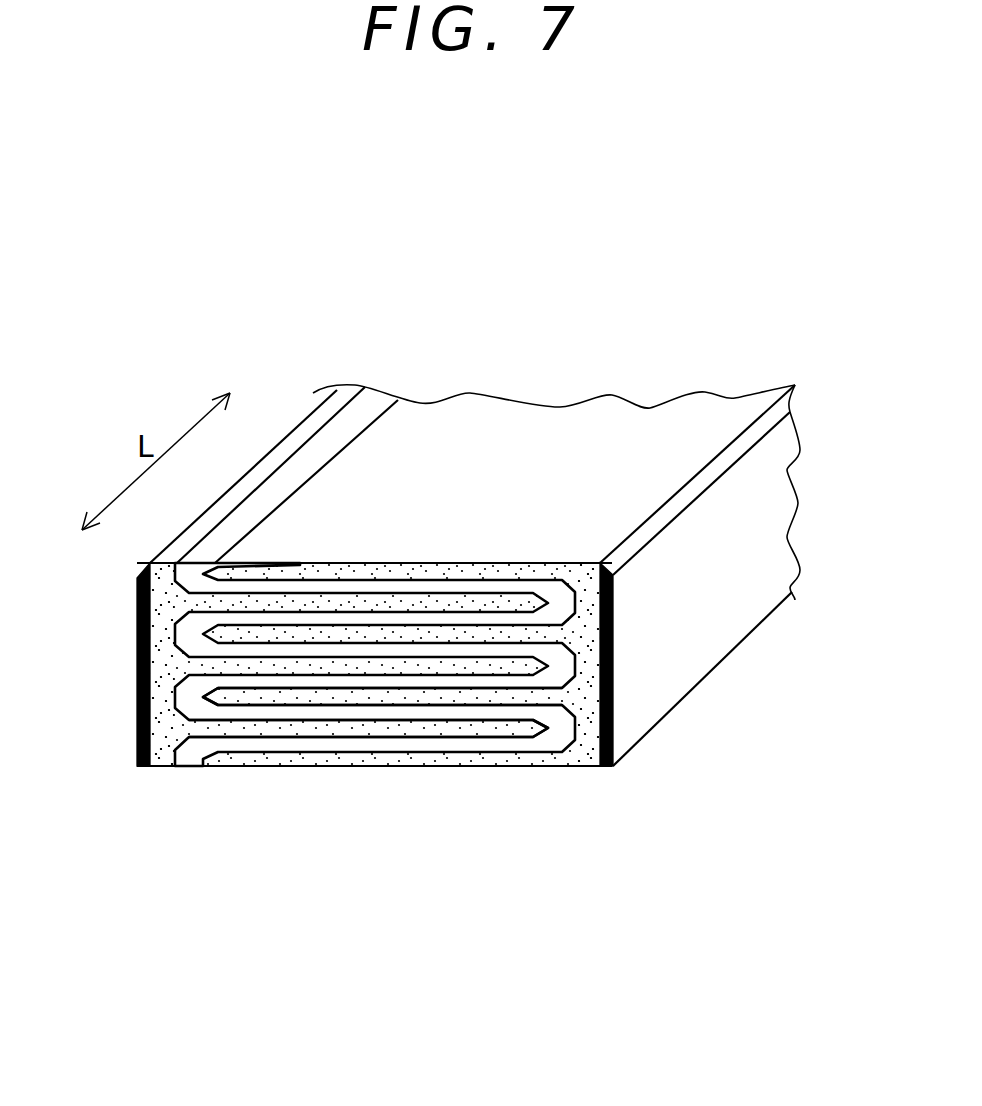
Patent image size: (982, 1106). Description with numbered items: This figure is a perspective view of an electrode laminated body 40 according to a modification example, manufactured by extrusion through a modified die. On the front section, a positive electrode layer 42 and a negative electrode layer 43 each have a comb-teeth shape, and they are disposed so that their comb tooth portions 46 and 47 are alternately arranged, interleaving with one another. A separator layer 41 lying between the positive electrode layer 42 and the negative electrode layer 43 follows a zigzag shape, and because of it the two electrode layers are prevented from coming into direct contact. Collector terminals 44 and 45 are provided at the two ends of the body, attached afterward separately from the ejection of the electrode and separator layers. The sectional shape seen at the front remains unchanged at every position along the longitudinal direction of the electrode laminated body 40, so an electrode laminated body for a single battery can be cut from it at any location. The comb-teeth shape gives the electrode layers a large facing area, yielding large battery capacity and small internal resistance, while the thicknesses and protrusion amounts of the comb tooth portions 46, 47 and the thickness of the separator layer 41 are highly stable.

The electrode laminated body 40 is at (778, 320).
The separator layer 41 is at (558, 735).
The positive electrode layer 42 is at (584, 693).
The negative electrode layer 43 is at (165, 730).
The collector terminal 44 is at (613, 652).
The collector terminal 45 is at (137, 652).
The comb tooth portion 46 is at (382, 703).
The comb tooth portion 47 is at (358, 668).